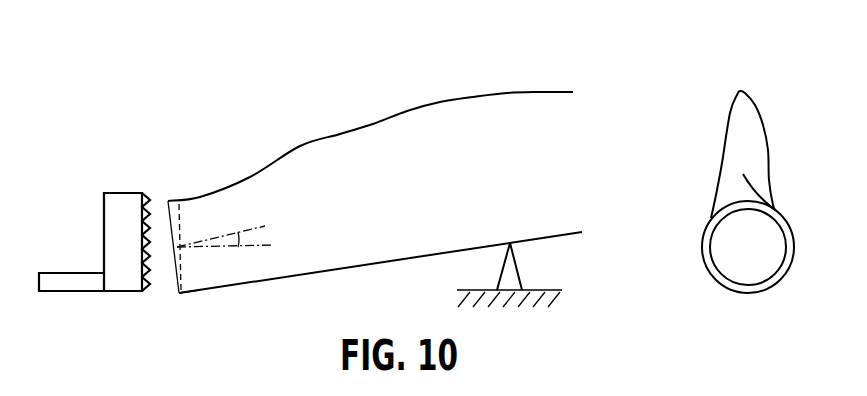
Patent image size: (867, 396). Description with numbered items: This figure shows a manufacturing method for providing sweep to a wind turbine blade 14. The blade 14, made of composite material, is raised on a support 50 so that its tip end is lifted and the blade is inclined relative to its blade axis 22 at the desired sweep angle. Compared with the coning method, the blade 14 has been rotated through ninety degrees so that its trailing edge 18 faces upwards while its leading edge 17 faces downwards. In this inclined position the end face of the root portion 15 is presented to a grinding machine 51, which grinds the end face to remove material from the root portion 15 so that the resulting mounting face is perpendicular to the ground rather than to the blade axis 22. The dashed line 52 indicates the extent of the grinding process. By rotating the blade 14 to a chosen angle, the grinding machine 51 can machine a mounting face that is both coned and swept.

The blade 14 is at (483, 219).
The root portion 15 is at (191, 291).
The leading edge 17 is at (367, 269).
The trailing edge 18 is at (480, 97).
The blade axis 22 is at (270, 224).
The support 50 is at (518, 268).
The grinding machine 51 is at (125, 193).
The dashed line 52 is at (178, 211).